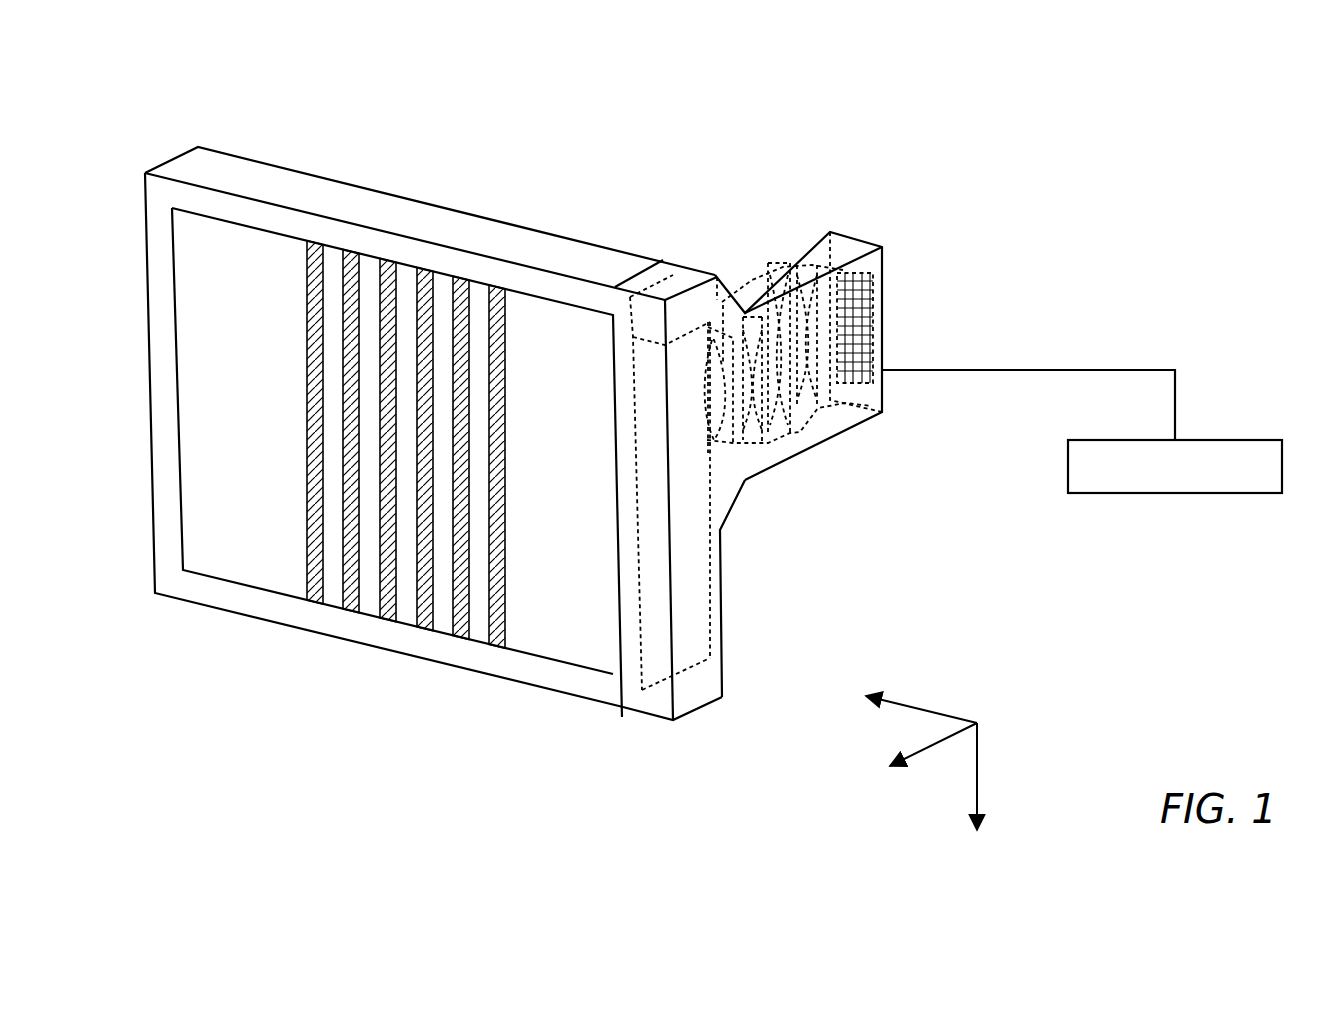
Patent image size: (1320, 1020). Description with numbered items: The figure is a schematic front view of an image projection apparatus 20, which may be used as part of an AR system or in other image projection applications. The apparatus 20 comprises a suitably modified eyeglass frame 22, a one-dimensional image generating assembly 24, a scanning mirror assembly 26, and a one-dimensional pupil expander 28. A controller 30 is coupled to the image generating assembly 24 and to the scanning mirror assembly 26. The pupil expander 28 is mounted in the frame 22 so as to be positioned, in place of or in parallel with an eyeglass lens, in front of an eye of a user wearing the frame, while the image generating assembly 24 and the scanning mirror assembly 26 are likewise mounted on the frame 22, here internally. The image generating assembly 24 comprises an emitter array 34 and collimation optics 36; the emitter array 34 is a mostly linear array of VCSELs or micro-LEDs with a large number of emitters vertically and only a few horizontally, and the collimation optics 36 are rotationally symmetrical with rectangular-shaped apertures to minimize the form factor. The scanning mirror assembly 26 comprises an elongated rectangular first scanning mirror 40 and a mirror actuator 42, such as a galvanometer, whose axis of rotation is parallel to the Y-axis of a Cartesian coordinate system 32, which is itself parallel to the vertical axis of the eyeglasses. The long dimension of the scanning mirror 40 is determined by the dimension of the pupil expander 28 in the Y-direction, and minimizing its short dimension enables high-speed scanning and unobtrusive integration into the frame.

The image projection apparatus 20 is at (145, 98).
The eyeglass frame 22 is at (427, 203).
The 1D image generating assembly 24 is at (912, 477).
The scanning mirror assembly 26 is at (697, 702).
The 1D pupil expander 28 is at (335, 580).
The controller 30 is at (1177, 495).
The Cartesian coordinate system 32 is at (1060, 703).
The emitter array 34 is at (853, 287).
The collimation optics 36 is at (777, 323).
The first scanning mirror 40 is at (680, 540).
The mirror actuator 42 is at (690, 313).